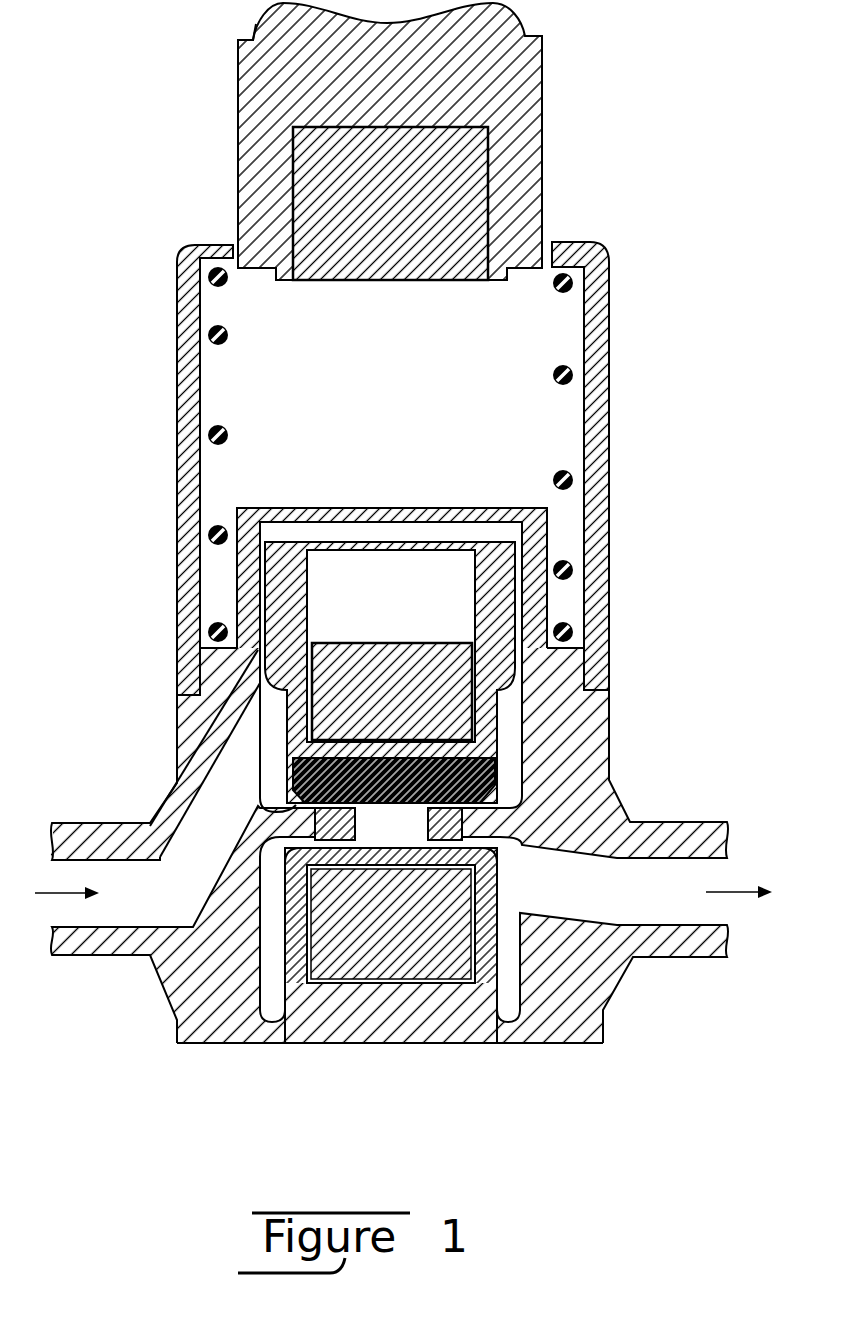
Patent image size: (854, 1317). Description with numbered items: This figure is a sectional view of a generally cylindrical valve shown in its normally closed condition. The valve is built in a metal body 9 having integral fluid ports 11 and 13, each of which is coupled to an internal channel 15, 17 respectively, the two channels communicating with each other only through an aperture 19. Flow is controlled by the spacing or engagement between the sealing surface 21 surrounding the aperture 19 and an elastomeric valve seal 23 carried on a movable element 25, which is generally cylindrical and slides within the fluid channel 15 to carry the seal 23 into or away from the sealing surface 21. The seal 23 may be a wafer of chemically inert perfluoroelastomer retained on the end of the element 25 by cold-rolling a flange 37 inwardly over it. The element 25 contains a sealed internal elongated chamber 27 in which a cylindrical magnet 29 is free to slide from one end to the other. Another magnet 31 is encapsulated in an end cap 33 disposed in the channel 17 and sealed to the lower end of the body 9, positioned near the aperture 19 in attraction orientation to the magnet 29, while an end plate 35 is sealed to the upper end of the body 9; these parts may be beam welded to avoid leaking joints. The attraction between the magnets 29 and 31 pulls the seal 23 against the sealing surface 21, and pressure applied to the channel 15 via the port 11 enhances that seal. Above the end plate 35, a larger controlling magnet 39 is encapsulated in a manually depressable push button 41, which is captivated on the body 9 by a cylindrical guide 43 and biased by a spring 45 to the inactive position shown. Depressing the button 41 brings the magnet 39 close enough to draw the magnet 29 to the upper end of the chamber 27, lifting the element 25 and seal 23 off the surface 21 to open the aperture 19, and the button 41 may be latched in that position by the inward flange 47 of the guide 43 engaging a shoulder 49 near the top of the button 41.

The metal body 9 is at (596, 728).
The fluid port 11 is at (106, 912).
The fluid port 13 is at (660, 907).
The internal channel 15 is at (268, 728).
The internal channel 17 is at (512, 898).
The aperture 19 is at (367, 820).
The sealing surface 21 is at (426, 808).
The elastomeric valve seal 23 is at (488, 788).
The movable element 25 is at (510, 637).
The internal chamber 27 is at (347, 563).
The magnet 29 is at (382, 642).
The magnet 31 is at (360, 972).
The end cap 33 is at (461, 1030).
The end plate 35 is at (408, 507).
The flange 37 is at (262, 807).
The magnet 39 is at (427, 280).
The push button 41 is at (537, 113).
The cylindrical guide 43 is at (600, 322).
The spring 45 is at (575, 489).
The inward flange 47 is at (223, 245).
The shoulder 49 is at (247, 33).